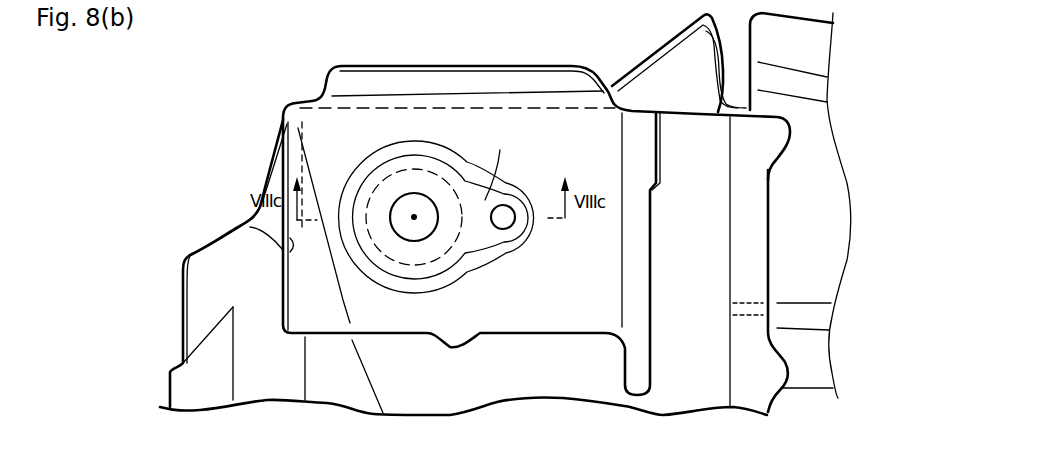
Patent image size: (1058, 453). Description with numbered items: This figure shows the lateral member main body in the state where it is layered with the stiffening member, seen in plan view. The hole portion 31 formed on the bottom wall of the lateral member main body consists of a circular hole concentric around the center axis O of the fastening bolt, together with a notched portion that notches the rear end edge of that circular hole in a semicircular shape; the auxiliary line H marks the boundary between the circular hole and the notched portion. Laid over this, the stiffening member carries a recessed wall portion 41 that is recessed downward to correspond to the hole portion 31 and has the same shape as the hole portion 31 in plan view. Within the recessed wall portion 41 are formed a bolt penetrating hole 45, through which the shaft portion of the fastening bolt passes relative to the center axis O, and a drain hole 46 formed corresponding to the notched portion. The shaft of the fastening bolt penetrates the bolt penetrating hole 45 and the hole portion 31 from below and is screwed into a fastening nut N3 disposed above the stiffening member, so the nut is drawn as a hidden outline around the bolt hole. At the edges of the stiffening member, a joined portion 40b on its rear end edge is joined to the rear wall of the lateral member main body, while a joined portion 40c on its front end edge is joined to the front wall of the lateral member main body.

The hole portion 31 is at (390, 147).
The recessed wall portion 41 is at (418, 154).
The auxiliary line H is at (500, 150).
The fastening nut N3 is at (368, 193).
The joined portion 40c is at (247, 222).
The joined portion 40b is at (634, 230).
The bolt penetrating hole 45 is at (394, 228).
The center axis O is at (414, 222).
The drain hole 46 is at (498, 228).